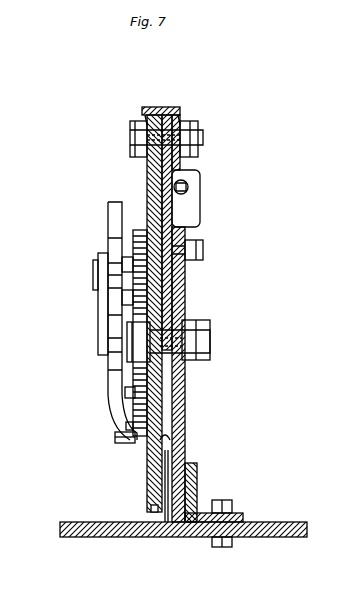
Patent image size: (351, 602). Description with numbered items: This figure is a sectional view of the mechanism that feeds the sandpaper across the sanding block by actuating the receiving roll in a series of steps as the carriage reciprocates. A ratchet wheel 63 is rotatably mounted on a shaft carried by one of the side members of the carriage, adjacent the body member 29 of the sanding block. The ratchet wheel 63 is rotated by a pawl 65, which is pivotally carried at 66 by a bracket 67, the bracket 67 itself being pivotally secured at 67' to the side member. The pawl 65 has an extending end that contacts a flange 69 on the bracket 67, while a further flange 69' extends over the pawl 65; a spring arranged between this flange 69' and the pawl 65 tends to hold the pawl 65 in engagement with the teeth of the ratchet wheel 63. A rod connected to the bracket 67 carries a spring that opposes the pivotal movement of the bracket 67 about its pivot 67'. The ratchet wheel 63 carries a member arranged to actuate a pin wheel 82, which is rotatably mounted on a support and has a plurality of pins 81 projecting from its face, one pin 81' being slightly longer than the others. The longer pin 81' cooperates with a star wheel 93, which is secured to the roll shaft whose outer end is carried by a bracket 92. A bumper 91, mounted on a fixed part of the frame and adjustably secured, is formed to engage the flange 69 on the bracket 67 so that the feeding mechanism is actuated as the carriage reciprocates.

The body member 29 is at (280, 522).
The ratchet wheel 63 is at (150, 487).
The pawl 65 is at (148, 115).
The pivot of pawl 66 is at (203, 137).
The bracket 67 is at (205, 198).
The pivot of bracket 67' is at (207, 250).
The flange 69 is at (183, 341).
The flange extending over the pawl 69' is at (161, 90).
The pins 81 is at (96, 395).
The longer pin 81' is at (97, 441).
The pin wheel 82 is at (134, 230).
The bumper 91 is at (180, 406).
The bracket 92 is at (98, 319).
The star wheel 93 is at (112, 226).